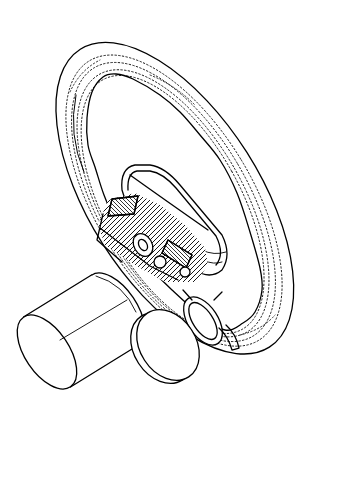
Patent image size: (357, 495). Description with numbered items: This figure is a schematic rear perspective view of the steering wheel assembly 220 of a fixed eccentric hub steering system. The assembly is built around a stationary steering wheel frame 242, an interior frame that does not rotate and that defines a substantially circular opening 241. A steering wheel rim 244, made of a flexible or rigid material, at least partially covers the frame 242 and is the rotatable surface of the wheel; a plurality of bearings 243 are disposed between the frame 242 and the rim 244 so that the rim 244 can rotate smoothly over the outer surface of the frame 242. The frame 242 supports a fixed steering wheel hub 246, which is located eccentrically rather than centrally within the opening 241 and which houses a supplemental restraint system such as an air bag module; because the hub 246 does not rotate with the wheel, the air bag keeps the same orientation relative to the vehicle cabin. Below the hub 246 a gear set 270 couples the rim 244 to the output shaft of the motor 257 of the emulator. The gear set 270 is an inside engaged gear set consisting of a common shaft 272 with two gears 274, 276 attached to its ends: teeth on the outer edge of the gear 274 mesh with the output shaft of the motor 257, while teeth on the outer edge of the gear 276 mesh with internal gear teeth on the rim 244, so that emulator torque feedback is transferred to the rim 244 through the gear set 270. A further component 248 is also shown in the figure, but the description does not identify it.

The steering wheel assembly 220 is at (234, 84).
The opening 241 is at (188, 168).
The steering wheel frame 242 is at (167, 92).
The bearings 243 is at (262, 327).
The steering wheel rim 244 is at (88, 68).
The steering wheel hub 246 is at (177, 213).
The gear assembly 248 is at (112, 228).
The motor 257 is at (56, 313).
The gear set 270 is at (128, 390).
The common shaft 272 is at (200, 345).
The gear 274 is at (162, 348).
The gear 276 is at (225, 350).